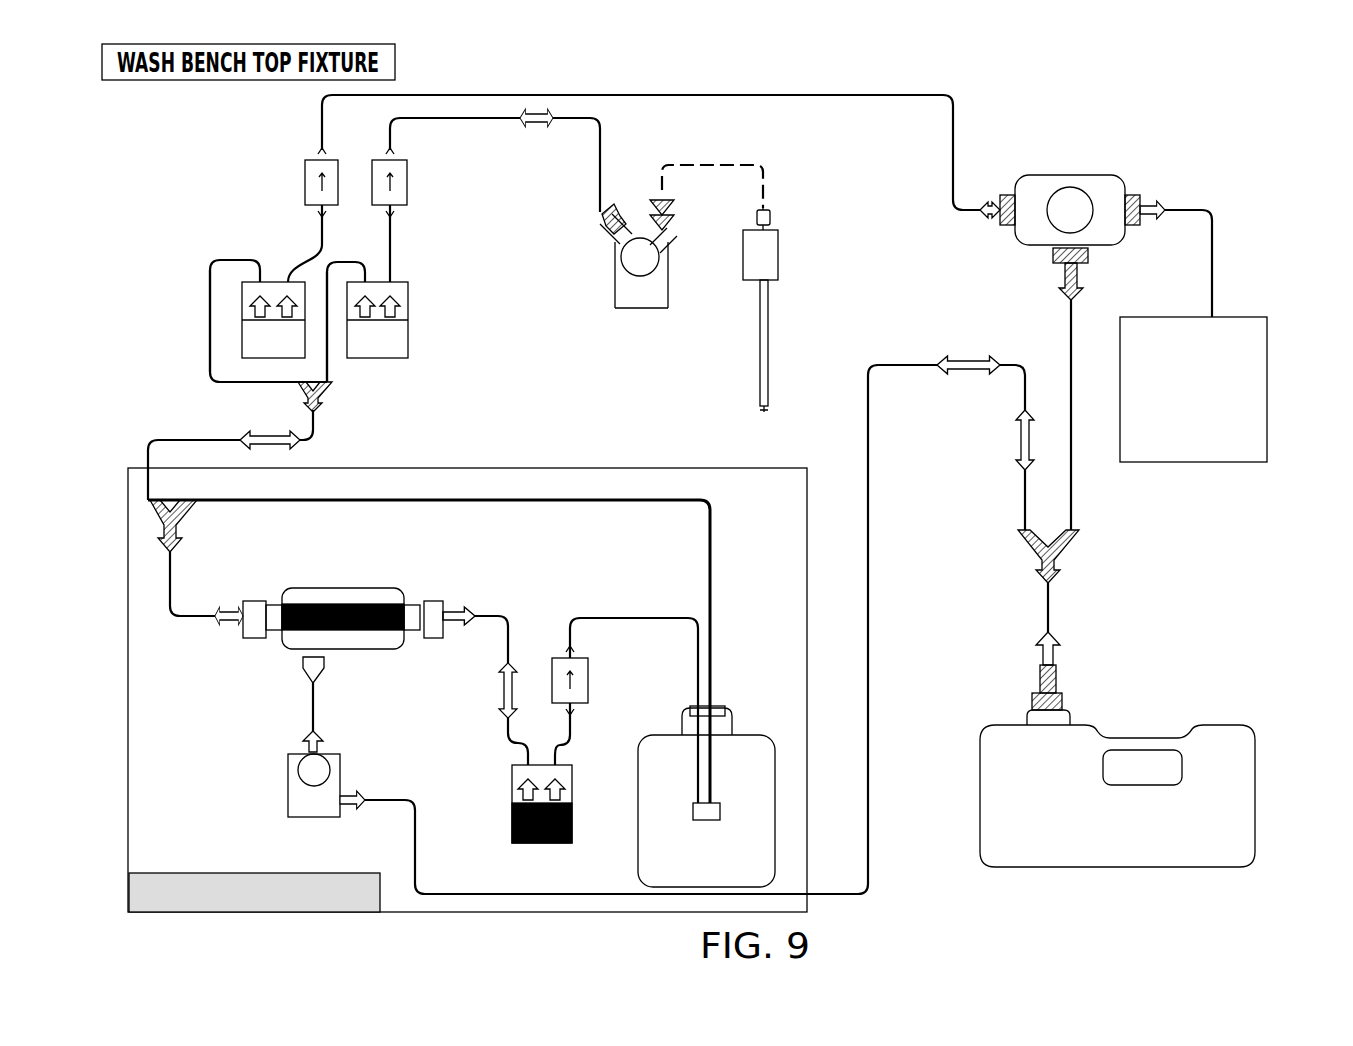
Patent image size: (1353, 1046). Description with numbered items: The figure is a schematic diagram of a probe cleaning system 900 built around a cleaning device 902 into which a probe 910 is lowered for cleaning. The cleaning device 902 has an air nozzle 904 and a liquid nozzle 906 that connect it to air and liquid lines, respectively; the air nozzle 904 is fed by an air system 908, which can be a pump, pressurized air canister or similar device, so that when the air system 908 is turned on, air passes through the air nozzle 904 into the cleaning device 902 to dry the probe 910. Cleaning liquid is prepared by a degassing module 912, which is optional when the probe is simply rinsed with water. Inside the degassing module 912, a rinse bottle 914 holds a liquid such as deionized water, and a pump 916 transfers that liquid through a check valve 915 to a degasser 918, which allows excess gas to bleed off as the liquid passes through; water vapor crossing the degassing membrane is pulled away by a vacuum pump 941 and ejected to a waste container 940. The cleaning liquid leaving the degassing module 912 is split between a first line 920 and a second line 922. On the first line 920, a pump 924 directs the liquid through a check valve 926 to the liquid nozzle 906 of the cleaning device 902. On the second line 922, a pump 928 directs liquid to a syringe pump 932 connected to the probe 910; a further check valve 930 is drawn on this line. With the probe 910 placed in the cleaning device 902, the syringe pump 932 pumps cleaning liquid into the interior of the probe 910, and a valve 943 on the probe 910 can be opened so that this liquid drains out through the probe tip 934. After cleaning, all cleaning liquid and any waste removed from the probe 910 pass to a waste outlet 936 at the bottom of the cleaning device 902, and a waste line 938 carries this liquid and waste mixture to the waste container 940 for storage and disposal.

The probe cleaning system 900 is at (1283, 140).
The cleaning device 902 is at (1092, 187).
The air nozzle 904 is at (1135, 200).
The liquid nozzle 906 is at (993, 224).
The air system 908 is at (1270, 383).
The probe 910 is at (780, 244).
The degassing module 912 is at (128, 590).
The rinse bottle 914 is at (762, 735).
The check valve 915 is at (590, 678).
The pump 916 is at (505, 776).
The degasser 918 is at (332, 587).
The first line 920 is at (210, 312).
The second line 922 is at (343, 262).
The pump 924 is at (257, 340).
The check valve 926 is at (305, 175).
The pump 928 is at (408, 315).
The valve 930 is at (407, 180).
The syringe pump 932 is at (613, 275).
The probe tip 934 is at (768, 414).
The waste outlet 936 is at (1092, 254).
The waste line 938 is at (1076, 497).
The waste container 940 is at (1203, 745).
The vacuum pump 941 is at (340, 755).
The valve 943 is at (773, 216).